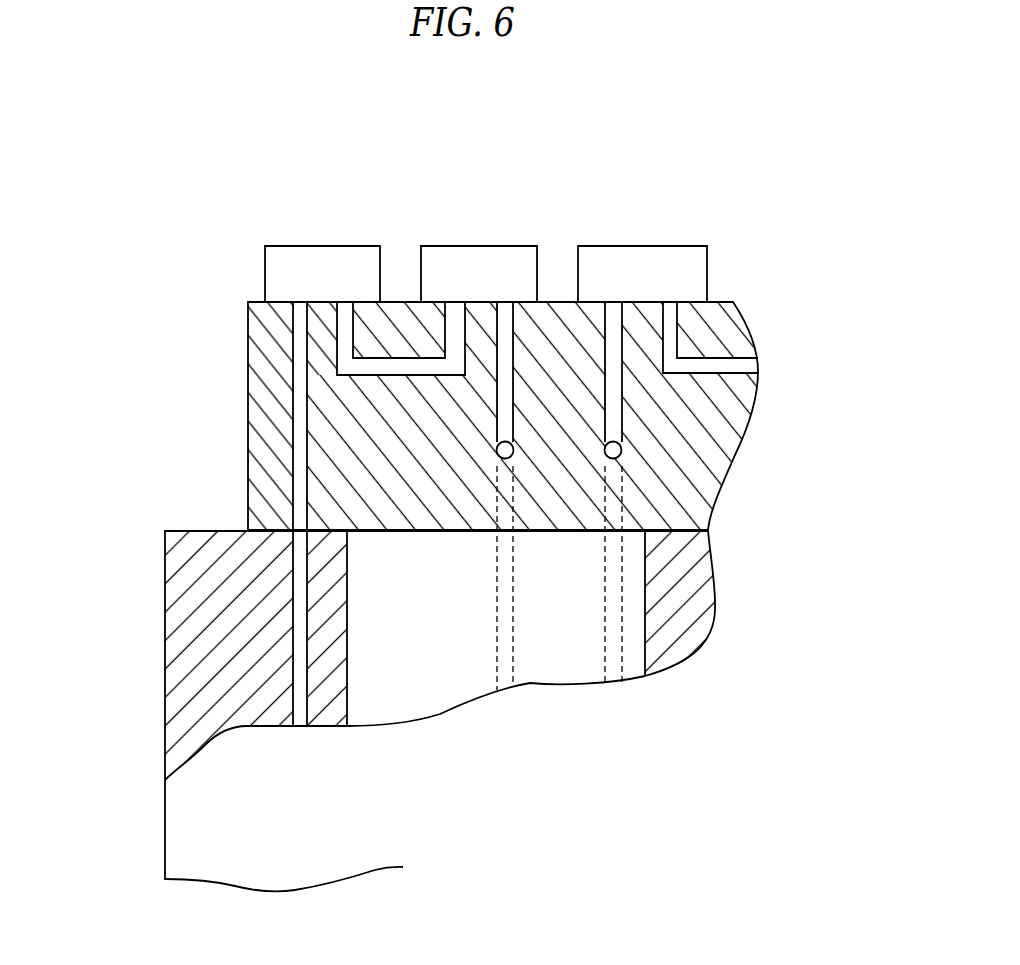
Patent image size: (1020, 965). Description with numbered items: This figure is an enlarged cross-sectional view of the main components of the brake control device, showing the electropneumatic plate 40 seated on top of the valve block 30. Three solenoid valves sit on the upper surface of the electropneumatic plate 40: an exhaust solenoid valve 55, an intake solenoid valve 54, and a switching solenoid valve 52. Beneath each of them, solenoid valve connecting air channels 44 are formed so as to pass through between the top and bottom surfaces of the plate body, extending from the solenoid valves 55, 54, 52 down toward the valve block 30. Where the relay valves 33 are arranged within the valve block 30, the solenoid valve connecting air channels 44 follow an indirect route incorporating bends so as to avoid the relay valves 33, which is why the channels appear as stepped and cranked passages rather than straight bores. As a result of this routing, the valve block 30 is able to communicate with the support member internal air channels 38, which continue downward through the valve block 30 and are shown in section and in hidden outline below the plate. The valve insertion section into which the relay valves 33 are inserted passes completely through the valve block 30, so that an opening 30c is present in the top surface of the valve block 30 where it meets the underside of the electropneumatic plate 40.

The valve block 30 is at (150, 807).
The opening 30c is at (390, 528).
The relay valve 33 is at (403, 712).
The support member internal air channel 38 is at (300, 712).
The electropneumatic plate 40 is at (222, 321).
The solenoid valve connecting air channel 44 is at (347, 332).
The switching solenoid valve 52 is at (653, 260).
The intake solenoid valve 54 is at (488, 260).
The exhaust solenoid valve 55 is at (332, 256).